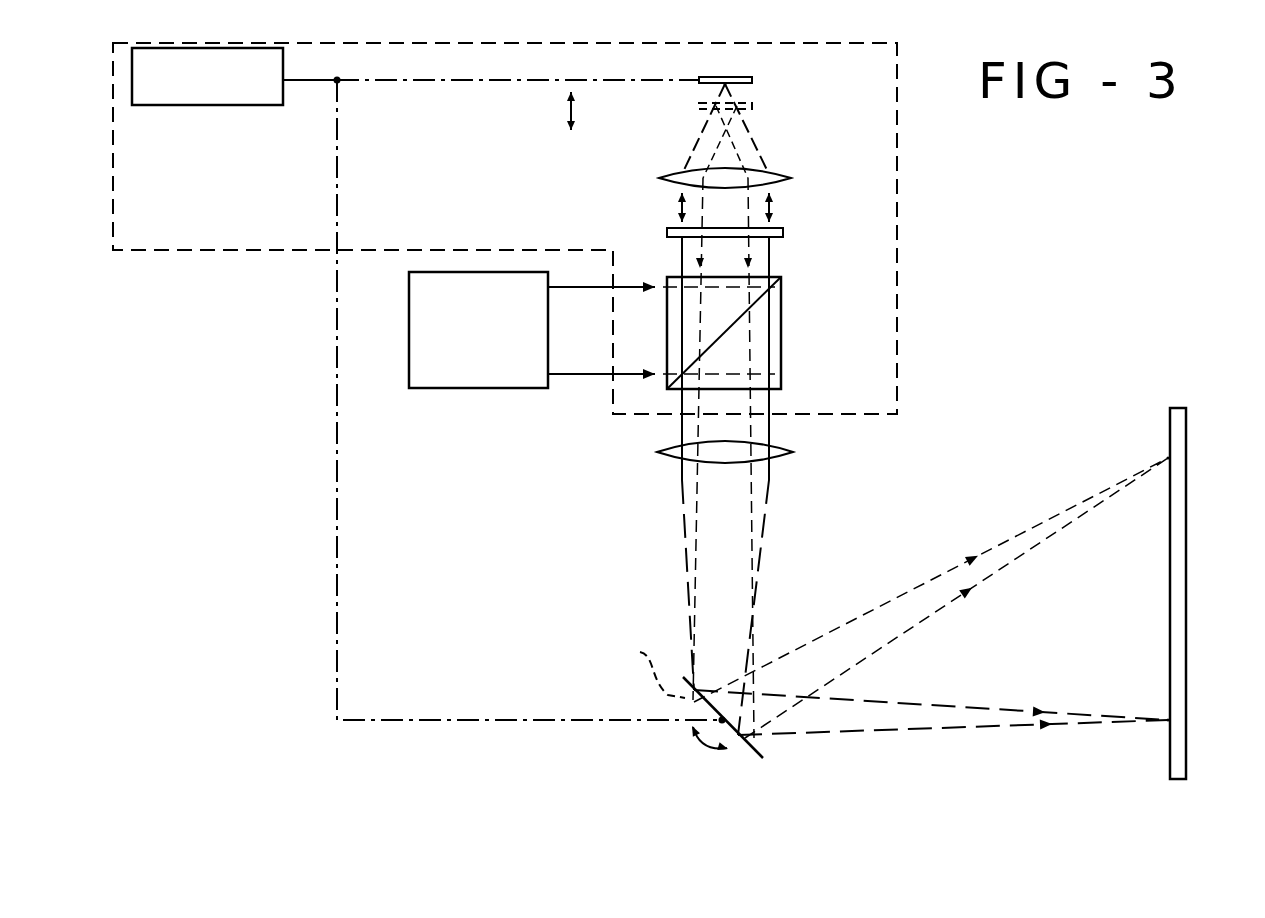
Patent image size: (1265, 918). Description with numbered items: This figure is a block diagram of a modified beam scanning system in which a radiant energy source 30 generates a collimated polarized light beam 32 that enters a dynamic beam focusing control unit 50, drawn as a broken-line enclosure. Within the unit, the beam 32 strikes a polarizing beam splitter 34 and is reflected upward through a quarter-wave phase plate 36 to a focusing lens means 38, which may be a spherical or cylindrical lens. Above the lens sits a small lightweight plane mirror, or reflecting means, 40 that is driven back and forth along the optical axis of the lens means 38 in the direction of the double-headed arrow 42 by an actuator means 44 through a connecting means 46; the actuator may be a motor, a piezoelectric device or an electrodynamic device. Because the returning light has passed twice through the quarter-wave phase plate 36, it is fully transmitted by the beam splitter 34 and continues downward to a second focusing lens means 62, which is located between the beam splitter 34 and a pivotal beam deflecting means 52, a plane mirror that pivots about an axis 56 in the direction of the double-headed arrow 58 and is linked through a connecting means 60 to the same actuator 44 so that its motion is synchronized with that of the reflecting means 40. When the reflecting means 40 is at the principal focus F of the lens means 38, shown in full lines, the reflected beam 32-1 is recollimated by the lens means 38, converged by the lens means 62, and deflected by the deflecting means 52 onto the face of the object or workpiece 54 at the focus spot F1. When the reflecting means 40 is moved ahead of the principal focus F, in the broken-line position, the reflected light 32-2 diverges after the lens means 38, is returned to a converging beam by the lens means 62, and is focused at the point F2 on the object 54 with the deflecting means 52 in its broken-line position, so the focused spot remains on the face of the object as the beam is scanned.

The radiant energy source 30 is at (409, 390).
The collimated polarized light beam 32 is at (600, 373).
The light beam reflected by reflecting means 32-1 is at (763, 503).
The reflected light 32-2 is at (700, 242).
The polarizing beam splitter 34 is at (781, 320).
The quarter-wave phase plate 36 is at (783, 232).
The focusing lens means 38 is at (790, 178).
The plane mirror (reflecting means) 40 is at (752, 78).
The double-headed arrow 42 is at (572, 108).
The actuator means 44 is at (192, 105).
The connecting means 46 is at (452, 82).
The dynamic beam focusing control unit 50 is at (240, 253).
The beam deflecting means 52 is at (648, 668).
The object or workpiece 54 is at (1186, 420).
The pivot axis 56 is at (738, 738).
The double-headed arrow 58 is at (700, 745).
The connecting means 60 is at (438, 720).
The second focusing lens means 62 is at (793, 452).
The principal focus F is at (735, 85).
The focus spot F1 is at (1168, 722).
The focal point F2 is at (1168, 458).